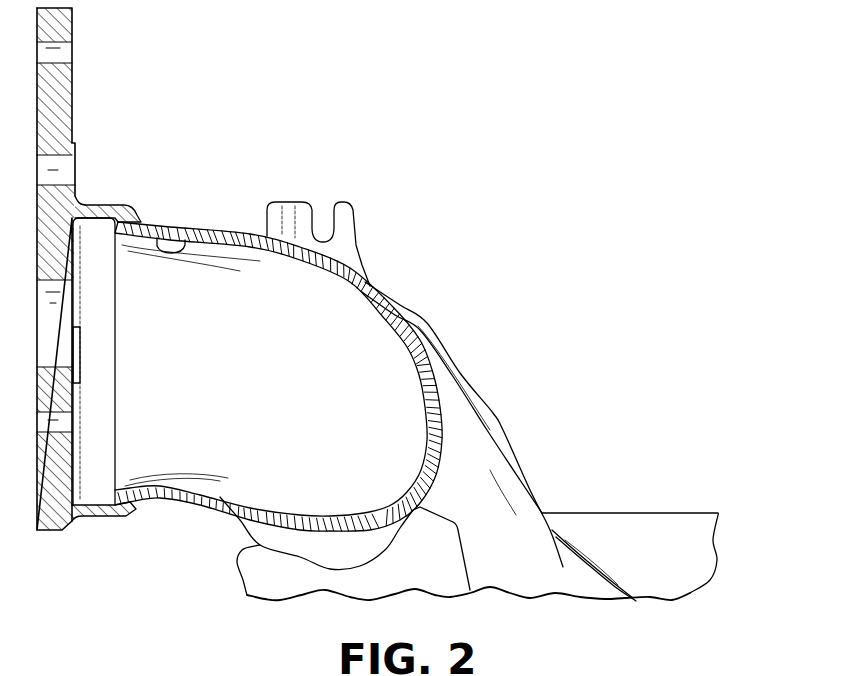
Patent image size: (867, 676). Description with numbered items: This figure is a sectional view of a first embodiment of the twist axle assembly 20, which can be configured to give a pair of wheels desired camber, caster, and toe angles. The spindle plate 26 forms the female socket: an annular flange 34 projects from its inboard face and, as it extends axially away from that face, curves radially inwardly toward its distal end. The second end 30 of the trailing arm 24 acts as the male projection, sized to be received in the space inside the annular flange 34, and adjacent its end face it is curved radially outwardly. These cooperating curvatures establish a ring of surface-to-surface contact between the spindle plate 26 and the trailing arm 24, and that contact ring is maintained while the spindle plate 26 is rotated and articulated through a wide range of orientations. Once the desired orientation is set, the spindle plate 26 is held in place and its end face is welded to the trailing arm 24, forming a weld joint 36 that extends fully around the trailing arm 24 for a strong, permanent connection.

The twist axle assembly 20 is at (412, 196).
The trailing arm 24 is at (494, 411).
The spindle plate 26 is at (75, 100).
The second end 30 is at (187, 240).
The annular flange 34 is at (108, 205).
The weld joint 36 is at (130, 509).